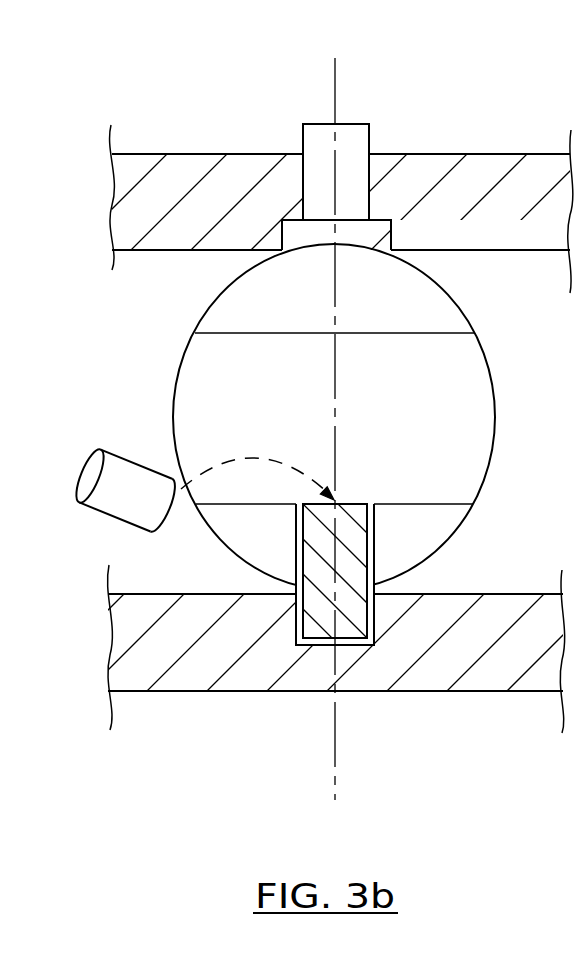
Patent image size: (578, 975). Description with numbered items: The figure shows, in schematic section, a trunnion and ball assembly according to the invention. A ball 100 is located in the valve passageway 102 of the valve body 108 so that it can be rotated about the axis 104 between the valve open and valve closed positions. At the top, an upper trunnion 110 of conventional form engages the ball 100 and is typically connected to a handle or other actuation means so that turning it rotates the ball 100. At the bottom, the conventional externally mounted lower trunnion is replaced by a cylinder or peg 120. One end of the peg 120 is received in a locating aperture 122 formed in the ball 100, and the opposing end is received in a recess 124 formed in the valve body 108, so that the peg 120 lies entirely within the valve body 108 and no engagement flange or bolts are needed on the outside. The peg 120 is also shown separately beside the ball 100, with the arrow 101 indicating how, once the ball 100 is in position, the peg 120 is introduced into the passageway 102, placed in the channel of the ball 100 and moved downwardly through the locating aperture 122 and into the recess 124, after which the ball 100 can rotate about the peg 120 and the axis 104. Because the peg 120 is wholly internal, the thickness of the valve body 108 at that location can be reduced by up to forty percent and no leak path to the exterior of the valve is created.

The ball 100 is at (420, 323).
The arrow 101 is at (223, 440).
The valve passageway 102 is at (511, 425).
The axis 104 is at (333, 108).
The valve body 108 is at (472, 220).
The upper trunnion 110 is at (358, 145).
The peg 120 is at (85, 506).
The locating aperture 122 is at (374, 553).
The recess 124 is at (287, 688).